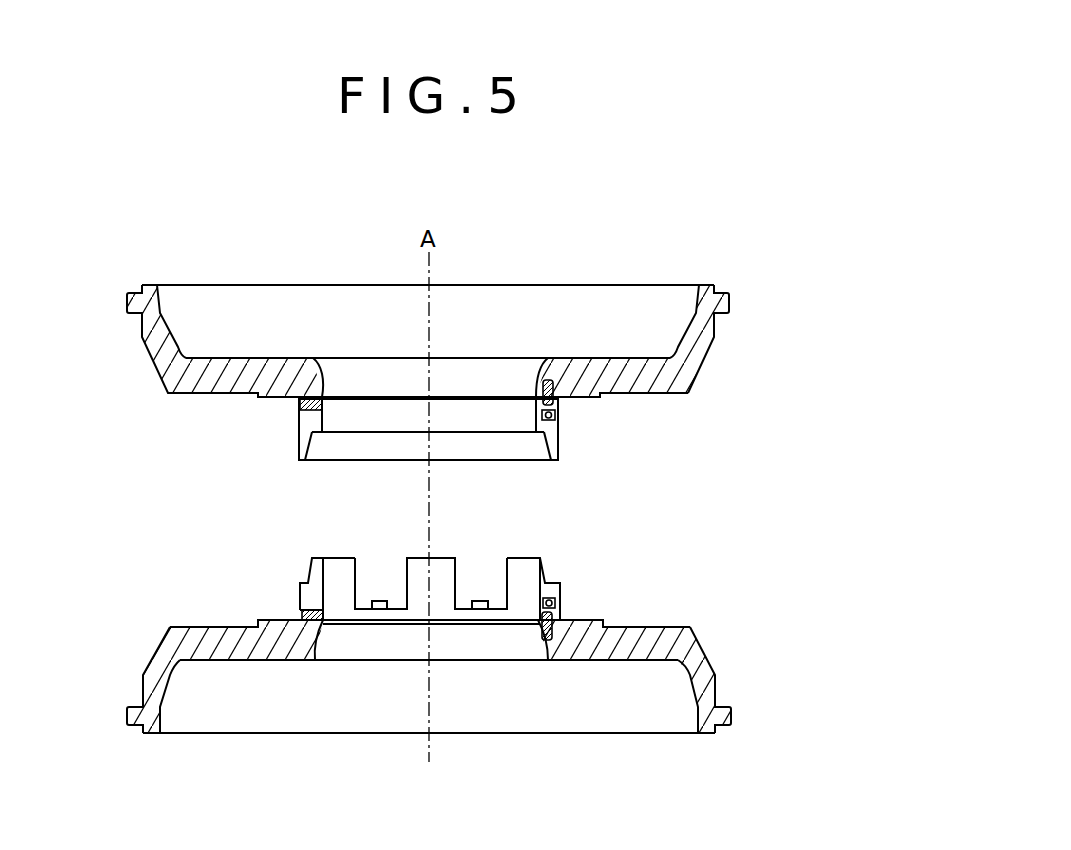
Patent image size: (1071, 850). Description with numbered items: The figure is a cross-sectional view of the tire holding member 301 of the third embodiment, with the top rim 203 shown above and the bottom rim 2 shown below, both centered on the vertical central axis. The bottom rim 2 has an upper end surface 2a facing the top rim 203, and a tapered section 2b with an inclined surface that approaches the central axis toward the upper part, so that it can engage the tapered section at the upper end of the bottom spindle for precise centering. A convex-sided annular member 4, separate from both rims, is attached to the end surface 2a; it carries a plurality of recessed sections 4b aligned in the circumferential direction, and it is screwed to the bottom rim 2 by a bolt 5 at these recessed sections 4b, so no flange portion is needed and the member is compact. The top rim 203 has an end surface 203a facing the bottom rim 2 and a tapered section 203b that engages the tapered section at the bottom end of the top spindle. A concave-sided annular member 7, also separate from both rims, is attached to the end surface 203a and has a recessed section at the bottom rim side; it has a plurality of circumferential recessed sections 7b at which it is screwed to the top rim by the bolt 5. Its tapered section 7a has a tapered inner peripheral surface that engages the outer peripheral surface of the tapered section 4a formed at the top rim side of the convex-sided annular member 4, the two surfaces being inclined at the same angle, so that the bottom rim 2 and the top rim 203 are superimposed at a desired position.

The tire holding member 301 is at (704, 259).
The top rim 203 is at (455, 375).
The end surface 203a is at (665, 392).
The tapered section 203b is at (325, 372).
The concave-sided annular member 7 is at (426, 456).
The tapered section 7a is at (312, 448).
The recessed sections 7b is at (557, 446).
The bolt 5 is at (547, 385).
The bottom rim 2 is at (415, 649).
The end surface 2a is at (200, 625).
The tapered section 2b is at (323, 660).
The convex-sided annular member 4 is at (431, 564).
The tapered section 4a is at (308, 572).
The recessed sections 4b is at (504, 582).